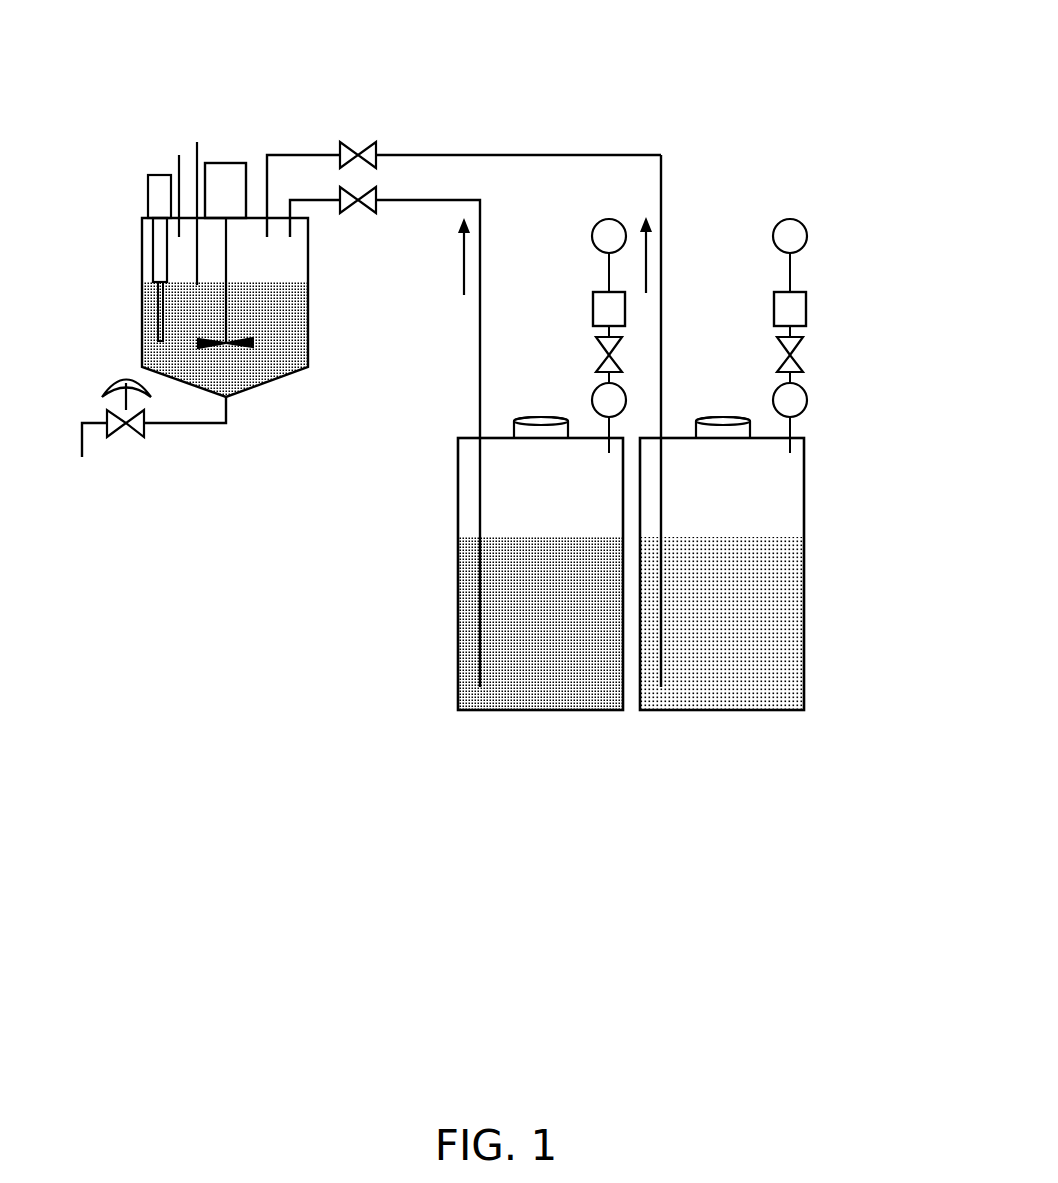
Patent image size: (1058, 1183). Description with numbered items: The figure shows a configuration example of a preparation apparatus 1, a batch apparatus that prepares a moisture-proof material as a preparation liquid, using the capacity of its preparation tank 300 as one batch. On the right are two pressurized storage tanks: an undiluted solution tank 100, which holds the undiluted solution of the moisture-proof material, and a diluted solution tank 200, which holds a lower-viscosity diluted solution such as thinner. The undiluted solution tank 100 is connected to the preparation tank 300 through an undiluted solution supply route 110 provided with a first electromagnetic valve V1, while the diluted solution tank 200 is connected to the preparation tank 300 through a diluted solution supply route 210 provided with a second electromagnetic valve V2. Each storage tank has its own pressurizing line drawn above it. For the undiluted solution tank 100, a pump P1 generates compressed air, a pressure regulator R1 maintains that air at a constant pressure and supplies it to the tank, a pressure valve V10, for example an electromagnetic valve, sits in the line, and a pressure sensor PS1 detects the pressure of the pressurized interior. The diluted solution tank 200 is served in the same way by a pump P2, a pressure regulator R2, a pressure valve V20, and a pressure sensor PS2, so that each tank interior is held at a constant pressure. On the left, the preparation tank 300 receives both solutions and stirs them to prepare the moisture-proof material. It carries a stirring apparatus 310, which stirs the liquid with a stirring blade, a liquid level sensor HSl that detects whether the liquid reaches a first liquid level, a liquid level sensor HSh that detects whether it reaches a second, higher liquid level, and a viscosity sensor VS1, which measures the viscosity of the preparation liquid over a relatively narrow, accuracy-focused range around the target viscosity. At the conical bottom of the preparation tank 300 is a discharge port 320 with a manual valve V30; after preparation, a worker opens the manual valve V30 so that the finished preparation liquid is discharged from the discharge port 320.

The preparation apparatus 1 is at (713, 78).
The undiluted solution tank 100 is at (536, 712).
The diluted solution tank 200 is at (721, 712).
The preparation tank 300 is at (142, 313).
The stirring apparatus 310 is at (228, 163).
The discharge port 320 is at (229, 398).
The undiluted solution supply route 110 is at (425, 203).
The diluted solution supply route 210 is at (523, 157).
The first electromagnetic valve V1 is at (358, 214).
The second electromagnetic valve V2 is at (358, 142).
The pressure valve V10 is at (598, 351).
The pressure valve V20 is at (779, 351).
The manual valve V30 is at (116, 437).
The pump P1 is at (607, 219).
The pump P2 is at (788, 219).
The pressure regulator R1 is at (593, 309).
The pressure regulator R2 is at (774, 309).
The pressure sensor PS1 is at (592, 400).
The pressure sensor PS2 is at (773, 400).
The viscosity sensor VS1 is at (153, 256).
The liquid level sensor HSh is at (179, 165).
The liquid level sensor HSl is at (197, 150).